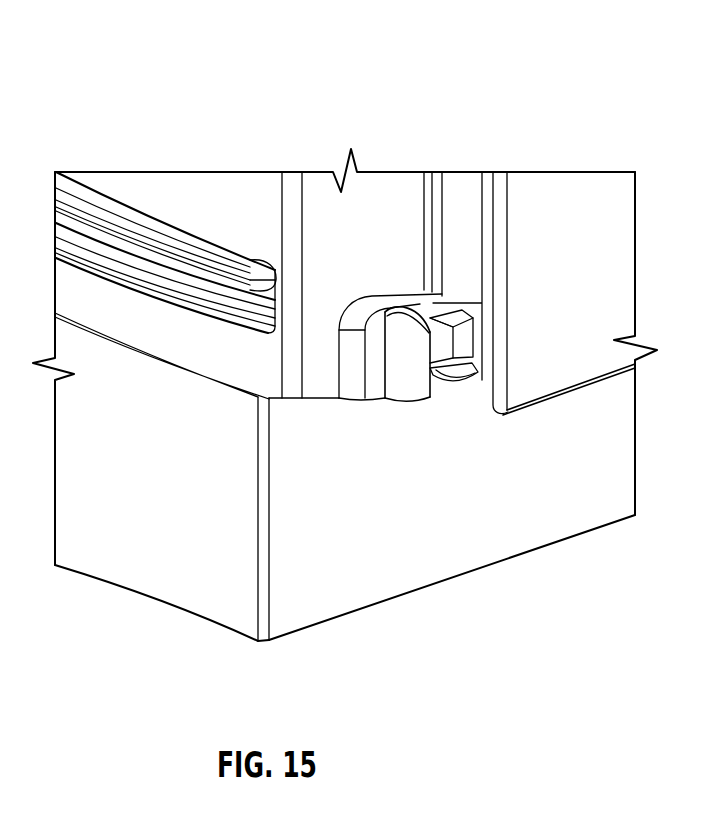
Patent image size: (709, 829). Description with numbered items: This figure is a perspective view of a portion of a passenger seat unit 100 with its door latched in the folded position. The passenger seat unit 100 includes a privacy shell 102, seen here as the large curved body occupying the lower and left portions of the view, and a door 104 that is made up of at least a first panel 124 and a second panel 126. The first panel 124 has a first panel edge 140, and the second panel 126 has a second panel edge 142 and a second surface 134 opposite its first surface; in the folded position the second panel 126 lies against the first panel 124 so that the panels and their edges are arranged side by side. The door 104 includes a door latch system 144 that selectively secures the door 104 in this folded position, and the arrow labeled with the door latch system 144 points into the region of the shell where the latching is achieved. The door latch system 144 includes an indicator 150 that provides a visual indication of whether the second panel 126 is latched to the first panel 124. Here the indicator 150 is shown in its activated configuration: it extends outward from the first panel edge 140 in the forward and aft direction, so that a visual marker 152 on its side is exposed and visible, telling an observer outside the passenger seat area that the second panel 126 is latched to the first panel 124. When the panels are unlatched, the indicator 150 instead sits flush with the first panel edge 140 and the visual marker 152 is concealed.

The passenger seat unit 100 is at (310, 115).
The privacy shell 102 is at (328, 385).
The door 104 is at (517, 390).
The first panel 124 is at (463, 182).
The second panel 126 is at (560, 190).
The second surface 134 is at (580, 360).
The first panel edge 140 is at (448, 237).
The second panel edge 142 is at (502, 268).
The door latch system 144 is at (425, 480).
The indicator 150 is at (398, 323).
The visual marker 152 is at (468, 340).